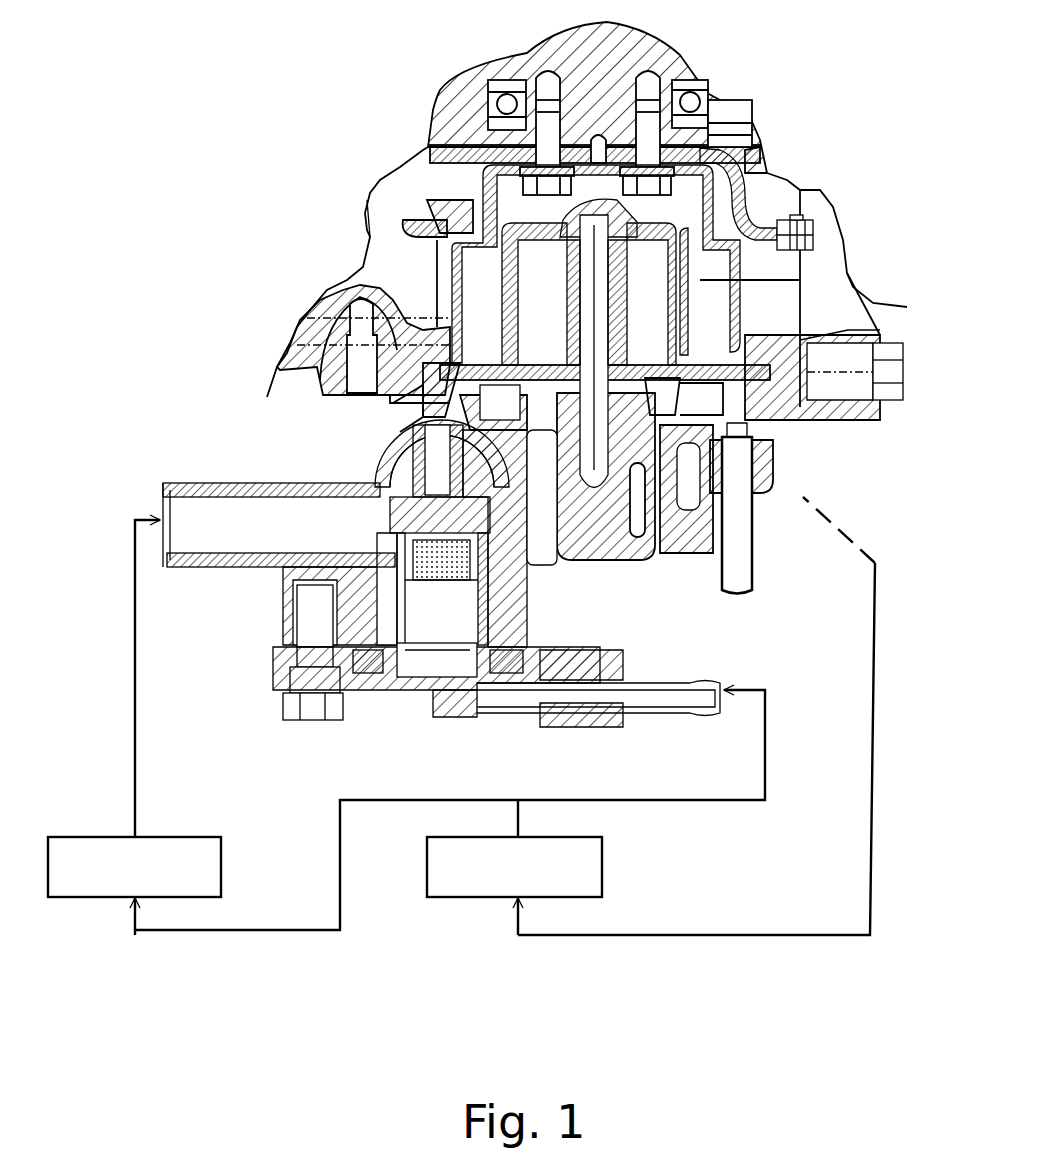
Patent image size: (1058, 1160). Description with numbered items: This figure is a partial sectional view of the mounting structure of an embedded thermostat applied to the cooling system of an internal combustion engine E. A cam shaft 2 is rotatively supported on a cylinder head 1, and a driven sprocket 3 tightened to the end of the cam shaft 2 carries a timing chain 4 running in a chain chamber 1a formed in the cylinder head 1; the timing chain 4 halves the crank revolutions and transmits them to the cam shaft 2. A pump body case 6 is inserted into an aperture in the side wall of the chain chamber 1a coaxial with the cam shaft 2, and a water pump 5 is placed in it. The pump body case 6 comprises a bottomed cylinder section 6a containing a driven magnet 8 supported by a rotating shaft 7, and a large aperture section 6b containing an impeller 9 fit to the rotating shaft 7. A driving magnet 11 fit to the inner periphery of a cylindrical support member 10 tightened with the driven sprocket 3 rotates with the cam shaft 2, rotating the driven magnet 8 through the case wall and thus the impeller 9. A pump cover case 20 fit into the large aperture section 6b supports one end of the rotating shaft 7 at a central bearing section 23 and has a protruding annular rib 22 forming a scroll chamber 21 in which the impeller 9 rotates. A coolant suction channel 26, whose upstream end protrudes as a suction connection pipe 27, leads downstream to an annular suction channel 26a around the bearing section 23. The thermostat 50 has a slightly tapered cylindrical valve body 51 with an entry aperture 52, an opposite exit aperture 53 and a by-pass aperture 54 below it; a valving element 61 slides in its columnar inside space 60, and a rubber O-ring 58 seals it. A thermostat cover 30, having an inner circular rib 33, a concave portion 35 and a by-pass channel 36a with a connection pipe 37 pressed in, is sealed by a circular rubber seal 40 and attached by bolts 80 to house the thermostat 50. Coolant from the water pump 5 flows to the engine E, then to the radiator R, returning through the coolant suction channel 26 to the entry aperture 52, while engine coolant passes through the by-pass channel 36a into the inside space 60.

The cylinder head 1 is at (455, 90).
The chain chamber 1a is at (375, 234).
The cam shaft 2 is at (660, 42).
The driven sprocket 3 is at (743, 205).
The timing chain 4 is at (820, 247).
The water pump 5 is at (495, 398).
The pump body case 6 is at (833, 268).
The bottomed cylinder section 6a is at (690, 295).
The large aperture section 6b is at (727, 362).
The rotating shaft 7 is at (593, 262).
The driven magnet 8 is at (653, 275).
The impeller 9 is at (670, 415).
The cylindrical support member 10 is at (442, 262).
The driving magnet 11 is at (472, 305).
The pump cover case 20 is at (333, 475).
The scroll chamber 21 is at (770, 428).
The annular rib 22 is at (800, 398).
The bearing section 23 is at (620, 540).
The coolant suction channel 26 is at (230, 520).
The annular suction channel 26a is at (527, 567).
The suction connection pipe 27 is at (210, 562).
The thermostat cover 30 is at (443, 718).
The inner circular rib 33 is at (480, 650).
The concave portion 35 is at (410, 670).
The by-pass channel 36a is at (503, 692).
The connection pipe 37 is at (672, 715).
The circular rubber seal 40 is at (363, 690).
The thermostat 50 is at (400, 470).
The valve body 51 is at (335, 602).
The entry aperture 52 is at (380, 518).
The exit aperture 53 is at (557, 476).
The by-pass aperture 54 is at (540, 545).
The rubber O-ring 58 is at (437, 652).
The inside space 60 is at (447, 627).
The valving element 61 is at (385, 490).
The bolts 80 is at (310, 722).
The radiator R is at (222, 865).
The internal combustion engine E is at (602, 865).